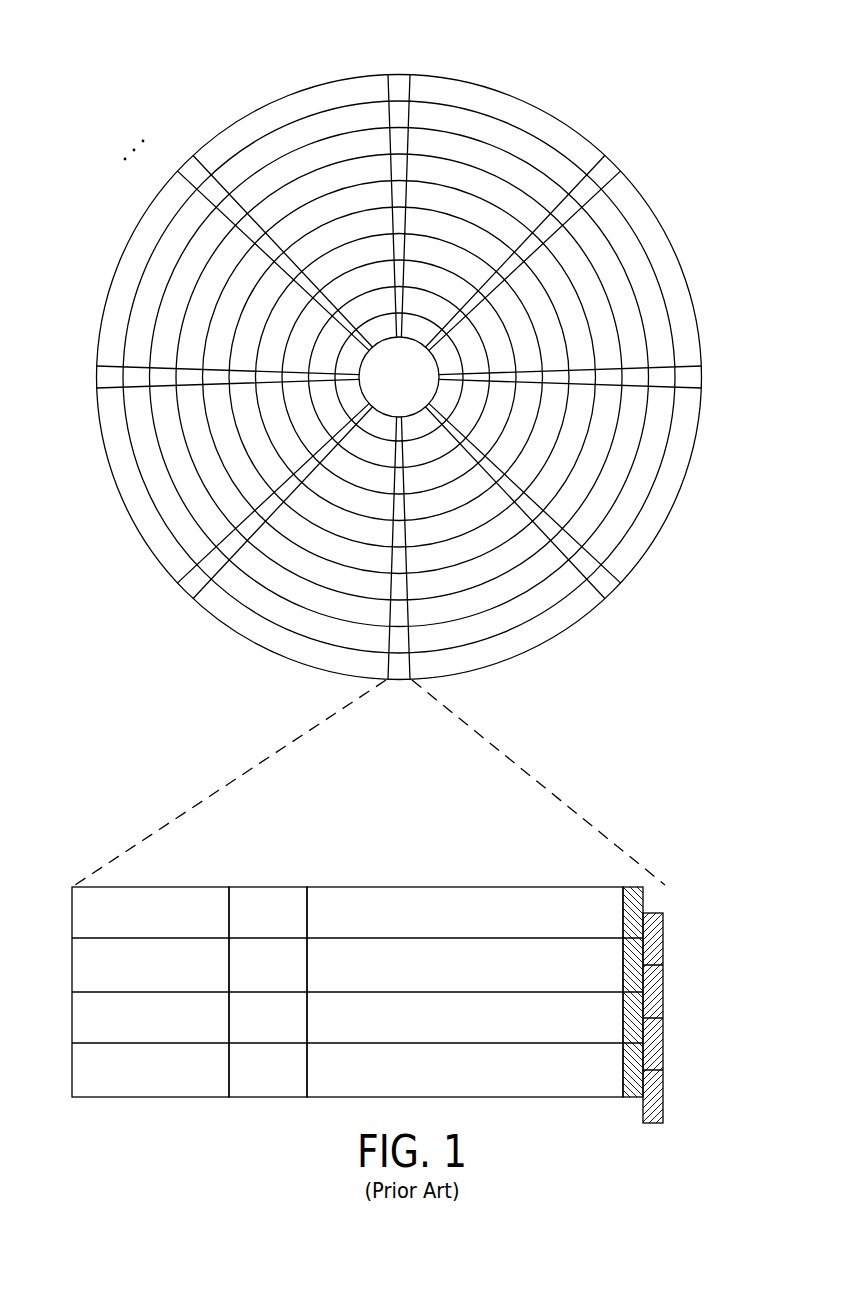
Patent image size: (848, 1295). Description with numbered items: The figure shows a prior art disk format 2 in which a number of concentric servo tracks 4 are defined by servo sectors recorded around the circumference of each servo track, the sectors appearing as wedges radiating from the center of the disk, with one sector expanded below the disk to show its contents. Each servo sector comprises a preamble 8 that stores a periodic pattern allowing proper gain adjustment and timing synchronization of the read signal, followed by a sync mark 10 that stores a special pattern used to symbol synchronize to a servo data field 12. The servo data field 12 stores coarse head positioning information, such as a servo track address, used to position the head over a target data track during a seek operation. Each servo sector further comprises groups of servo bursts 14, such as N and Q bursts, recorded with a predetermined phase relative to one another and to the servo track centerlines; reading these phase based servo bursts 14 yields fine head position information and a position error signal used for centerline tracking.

The disk format 2 is at (178, 78).
The servo track 4 is at (524, 120).
The preamble 8 is at (157, 886).
The sync mark 10 is at (272, 886).
The servo data field 12 is at (455, 886).
The servo bursts 14 is at (660, 888).